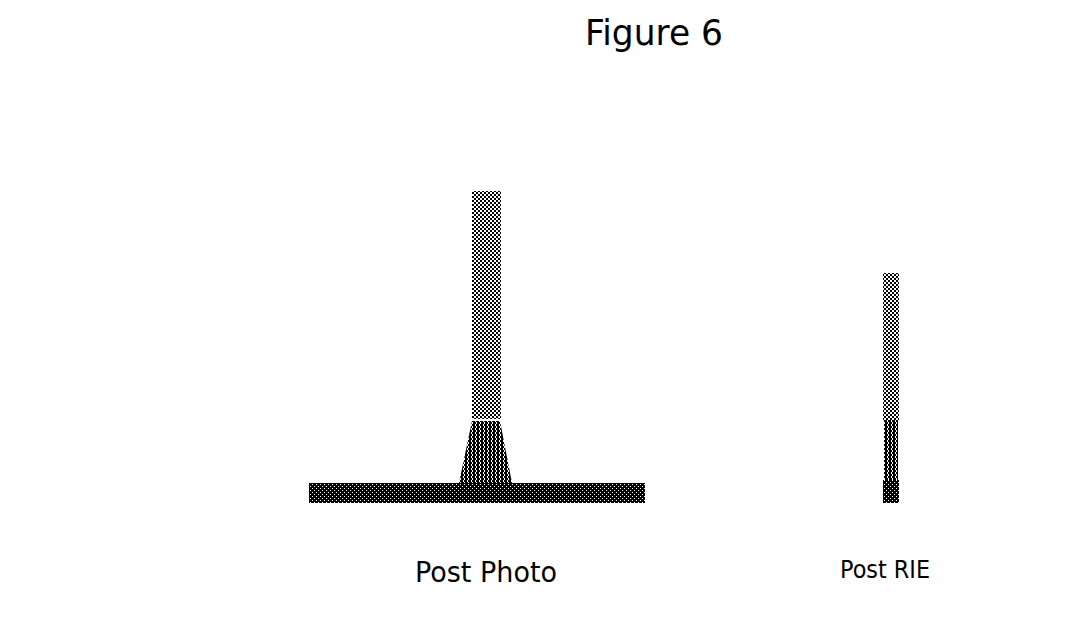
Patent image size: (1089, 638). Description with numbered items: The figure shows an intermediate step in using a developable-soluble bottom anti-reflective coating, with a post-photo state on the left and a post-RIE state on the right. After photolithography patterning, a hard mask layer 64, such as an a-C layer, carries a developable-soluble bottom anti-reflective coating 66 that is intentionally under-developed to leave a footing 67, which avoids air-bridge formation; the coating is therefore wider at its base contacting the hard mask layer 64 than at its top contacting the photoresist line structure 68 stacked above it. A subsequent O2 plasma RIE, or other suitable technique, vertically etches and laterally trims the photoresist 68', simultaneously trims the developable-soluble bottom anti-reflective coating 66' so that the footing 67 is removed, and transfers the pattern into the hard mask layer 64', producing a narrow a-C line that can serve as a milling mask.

The hard mask layer 64 is at (405, 484).
The developable-soluble bottom anti-reflective coating 66 is at (428, 429).
The footing 67 is at (434, 464).
The photoresist line structure 68 is at (397, 305).
The hard mask layer 64' is at (980, 509).
The developable-soluble bottom anti-reflective coating 66' is at (977, 420).
The photoresist 68' is at (956, 327).